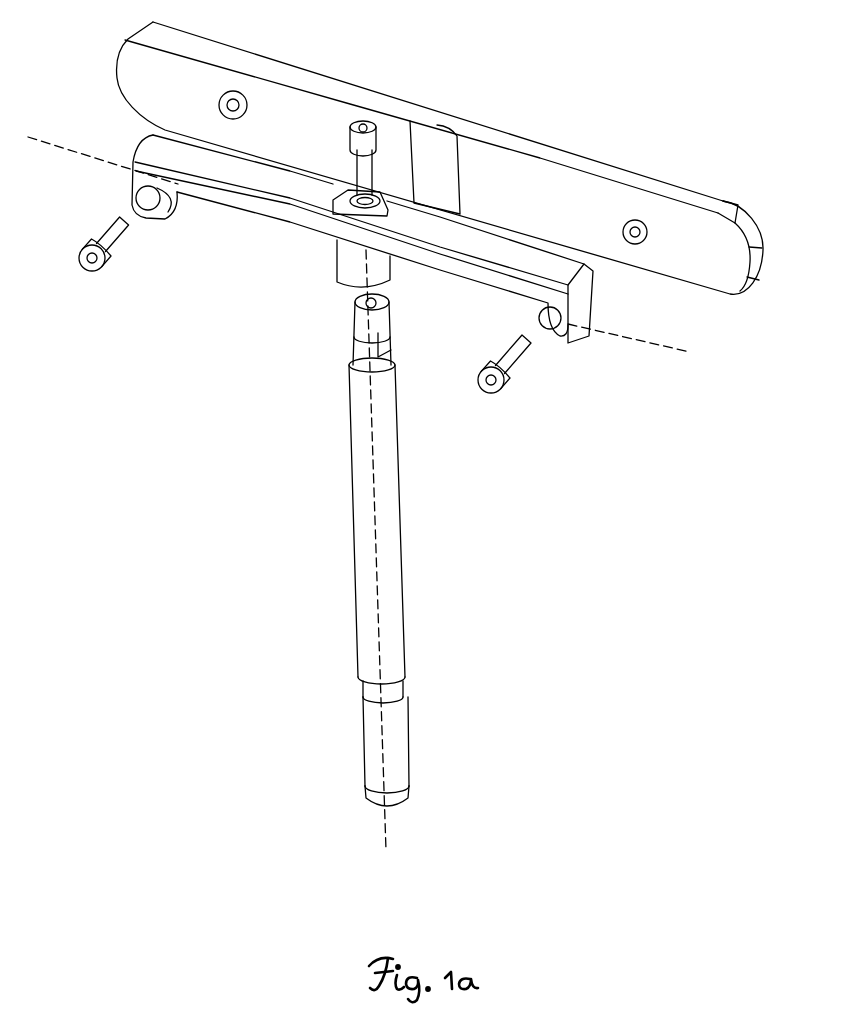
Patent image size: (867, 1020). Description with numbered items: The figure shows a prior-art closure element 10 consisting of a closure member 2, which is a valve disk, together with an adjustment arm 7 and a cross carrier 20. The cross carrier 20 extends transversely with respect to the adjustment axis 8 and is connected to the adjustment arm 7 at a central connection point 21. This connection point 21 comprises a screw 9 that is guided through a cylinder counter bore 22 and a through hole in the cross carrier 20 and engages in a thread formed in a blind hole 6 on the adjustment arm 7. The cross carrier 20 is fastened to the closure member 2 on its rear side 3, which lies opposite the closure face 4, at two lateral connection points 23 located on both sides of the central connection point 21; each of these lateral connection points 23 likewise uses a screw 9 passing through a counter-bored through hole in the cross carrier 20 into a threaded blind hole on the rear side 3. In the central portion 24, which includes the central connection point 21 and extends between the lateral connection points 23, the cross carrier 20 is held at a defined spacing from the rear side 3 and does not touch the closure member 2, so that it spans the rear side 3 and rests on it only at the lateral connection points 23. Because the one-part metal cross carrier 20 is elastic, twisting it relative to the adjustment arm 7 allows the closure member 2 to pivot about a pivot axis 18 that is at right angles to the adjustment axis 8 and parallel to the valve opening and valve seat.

The closure element 10 is at (708, 64).
The closure member 2 is at (513, 143).
The rear side 3 is at (712, 244).
The closure face 4 is at (592, 152).
The screw 9 is at (365, 121).
The cylinder counter bore 22 is at (376, 205).
The pivot axis 18 is at (110, 167).
The lateral connection points 23 is at (145, 160).
The cross carrier 20 is at (302, 249).
The central portion 24 is at (283, 205).
The connection point 21 is at (334, 282).
The blind hole 6 is at (349, 326).
The adjustment arm 7 is at (386, 562).
The adjustment axis 8 is at (380, 640).